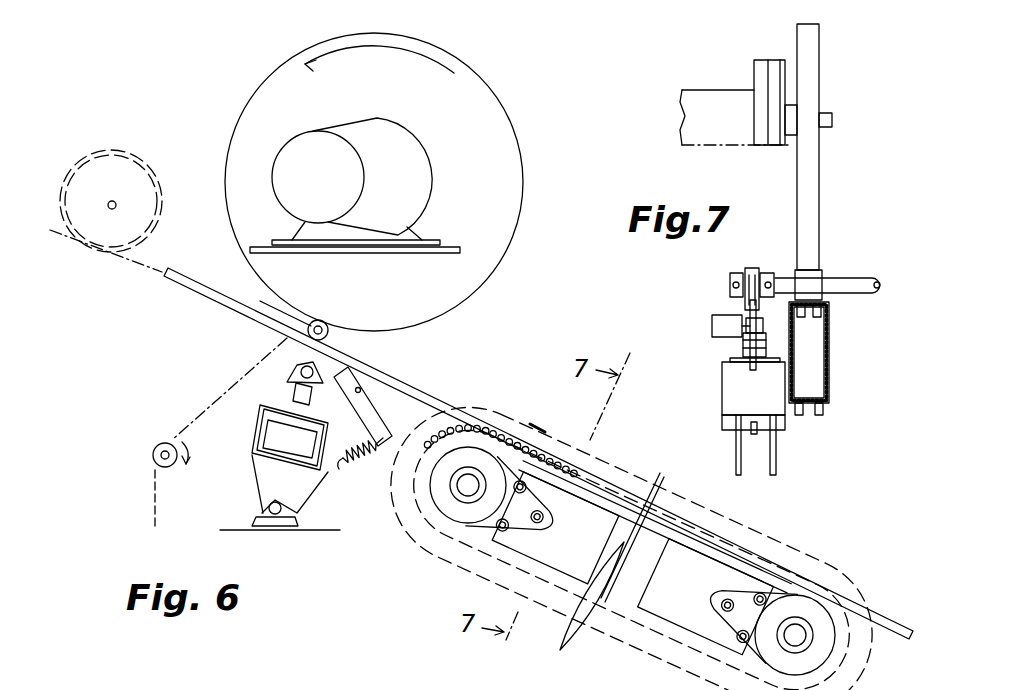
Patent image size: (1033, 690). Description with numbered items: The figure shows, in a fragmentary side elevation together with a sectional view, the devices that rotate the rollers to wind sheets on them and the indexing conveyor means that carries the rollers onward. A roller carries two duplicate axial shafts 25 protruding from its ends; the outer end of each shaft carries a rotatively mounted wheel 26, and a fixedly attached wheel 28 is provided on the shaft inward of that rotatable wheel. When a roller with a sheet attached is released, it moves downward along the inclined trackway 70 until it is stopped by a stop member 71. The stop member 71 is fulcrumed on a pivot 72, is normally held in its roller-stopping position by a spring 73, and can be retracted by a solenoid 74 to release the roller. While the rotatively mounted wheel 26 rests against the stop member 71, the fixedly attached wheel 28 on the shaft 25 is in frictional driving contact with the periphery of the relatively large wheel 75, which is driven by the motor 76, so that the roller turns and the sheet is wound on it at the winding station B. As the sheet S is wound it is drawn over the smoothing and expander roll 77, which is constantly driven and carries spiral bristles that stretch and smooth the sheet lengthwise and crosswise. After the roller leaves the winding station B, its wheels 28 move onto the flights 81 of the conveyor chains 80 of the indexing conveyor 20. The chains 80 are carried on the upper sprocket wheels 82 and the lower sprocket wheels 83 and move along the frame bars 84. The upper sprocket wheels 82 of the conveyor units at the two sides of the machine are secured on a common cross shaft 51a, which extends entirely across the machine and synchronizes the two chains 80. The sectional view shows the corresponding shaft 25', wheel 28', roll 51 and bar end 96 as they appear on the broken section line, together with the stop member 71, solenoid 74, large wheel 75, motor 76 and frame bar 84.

In FIG. 6, the indexing conveyor 20 is at (636, 468).
In FIG. 6, the axial shaft 25 is at (538, 453).
In FIG. 7, the track bar 25' is at (844, 266).
In FIG. 7, the rotatively mounted wheel 26 is at (751, 268).
In FIG. 6, the fixedly attached wheel 28 is at (354, 311).
In FIG. 7, the roller block 28' is at (834, 261).
In FIG. 6, the supply roll 51 is at (115, 202).
In FIG. 6, the common cross shaft 51a is at (462, 490).
In FIG. 6, the inclined trackway 70 is at (216, 296).
In FIG. 7, the inclined trackway 70 is at (745, 305).
In FIG. 6, the stop member 71 is at (350, 379).
In FIG. 7, the stop member 71 is at (745, 348).
In FIG. 6, the pivot 72 is at (362, 391).
In FIG. 6, the spring 73 is at (348, 464).
In FIG. 6, the solenoid 74 is at (278, 443).
In FIG. 7, the solenoid 74 is at (735, 393).
In FIG. 6, the large wheel 75 is at (491, 91).
In FIG. 7, the large wheel 75 is at (816, 68).
In FIG. 6, the motor 76 is at (410, 113).
In FIG. 7, the motor 76 is at (736, 76).
In FIG. 6, the smoothing and expander roll 77 is at (176, 470).
In FIG. 6, the conveyor chain 80 is at (578, 470).
In FIG. 6, the flight 81 is at (540, 437).
In FIG. 6, the upper sprocket wheel 82 is at (466, 525).
In FIG. 6, the lower sprocket wheel 83 is at (828, 598).
In FIG. 6, the frame bar 84 is at (612, 570).
In FIG. 7, the frame bar 84 is at (830, 355).
In FIG. 6, the bar end 96 is at (905, 640).
In FIG. 6, the web S is at (216, 396).
In FIG. 6, the winding station B is at (338, 300).